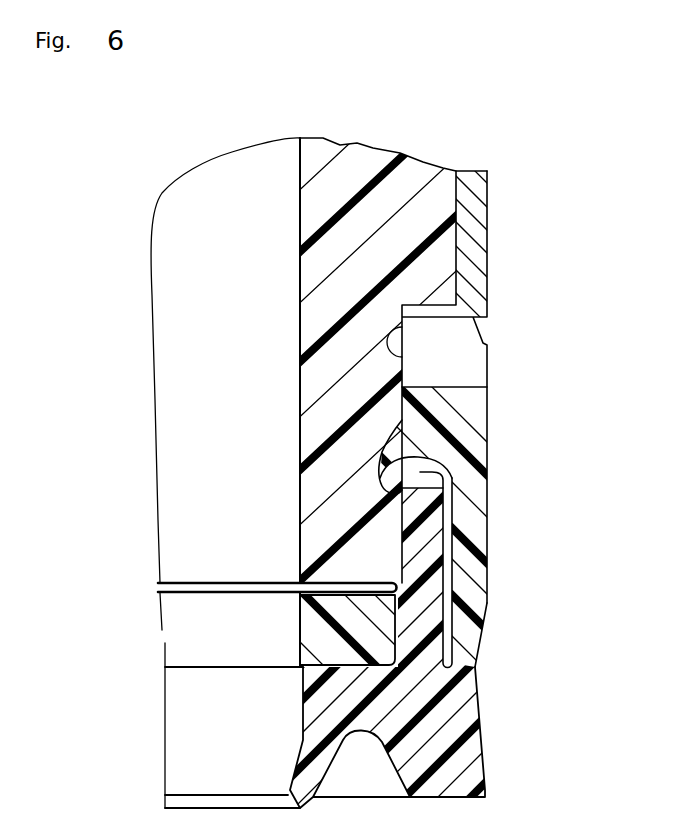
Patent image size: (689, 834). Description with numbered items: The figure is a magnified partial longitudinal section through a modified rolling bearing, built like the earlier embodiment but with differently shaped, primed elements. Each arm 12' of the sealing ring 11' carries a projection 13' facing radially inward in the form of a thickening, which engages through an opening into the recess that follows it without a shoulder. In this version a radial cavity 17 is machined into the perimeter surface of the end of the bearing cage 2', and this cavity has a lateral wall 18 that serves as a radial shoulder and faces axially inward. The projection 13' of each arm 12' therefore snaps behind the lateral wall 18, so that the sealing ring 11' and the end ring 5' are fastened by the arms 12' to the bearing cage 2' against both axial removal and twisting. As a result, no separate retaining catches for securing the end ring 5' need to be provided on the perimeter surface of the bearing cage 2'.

The bearing cage 2' is at (456, 333).
The end ring 5' is at (456, 410).
The radial cavity 17 is at (393, 457).
The projection 13' is at (502, 472).
The lateral wall 18 is at (376, 491).
The arm 12' is at (461, 481).
The sealing ring 11' is at (461, 620).